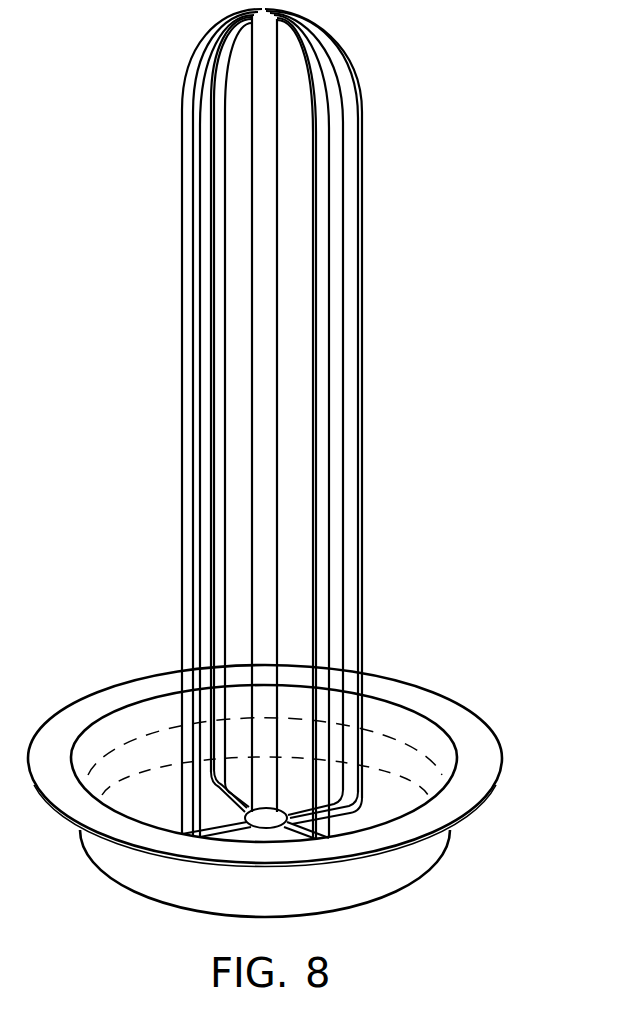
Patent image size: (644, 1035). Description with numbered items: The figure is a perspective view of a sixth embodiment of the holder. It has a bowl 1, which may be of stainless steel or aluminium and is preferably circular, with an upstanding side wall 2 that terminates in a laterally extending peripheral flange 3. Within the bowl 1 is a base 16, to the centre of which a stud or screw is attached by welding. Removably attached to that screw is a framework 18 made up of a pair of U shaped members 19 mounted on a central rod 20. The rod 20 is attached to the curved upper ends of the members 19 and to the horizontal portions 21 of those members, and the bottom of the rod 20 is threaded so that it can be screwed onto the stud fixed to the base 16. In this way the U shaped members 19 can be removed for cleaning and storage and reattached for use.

The bowl 1 is at (287, 786).
The side wall 2 is at (413, 870).
The peripheral flange 3 is at (490, 762).
The base 16 is at (368, 806).
The framework 18 is at (256, 424).
The U shaped members 19 is at (323, 115).
The central rod 20 is at (273, 413).
The horizontal portions 21 is at (233, 833).